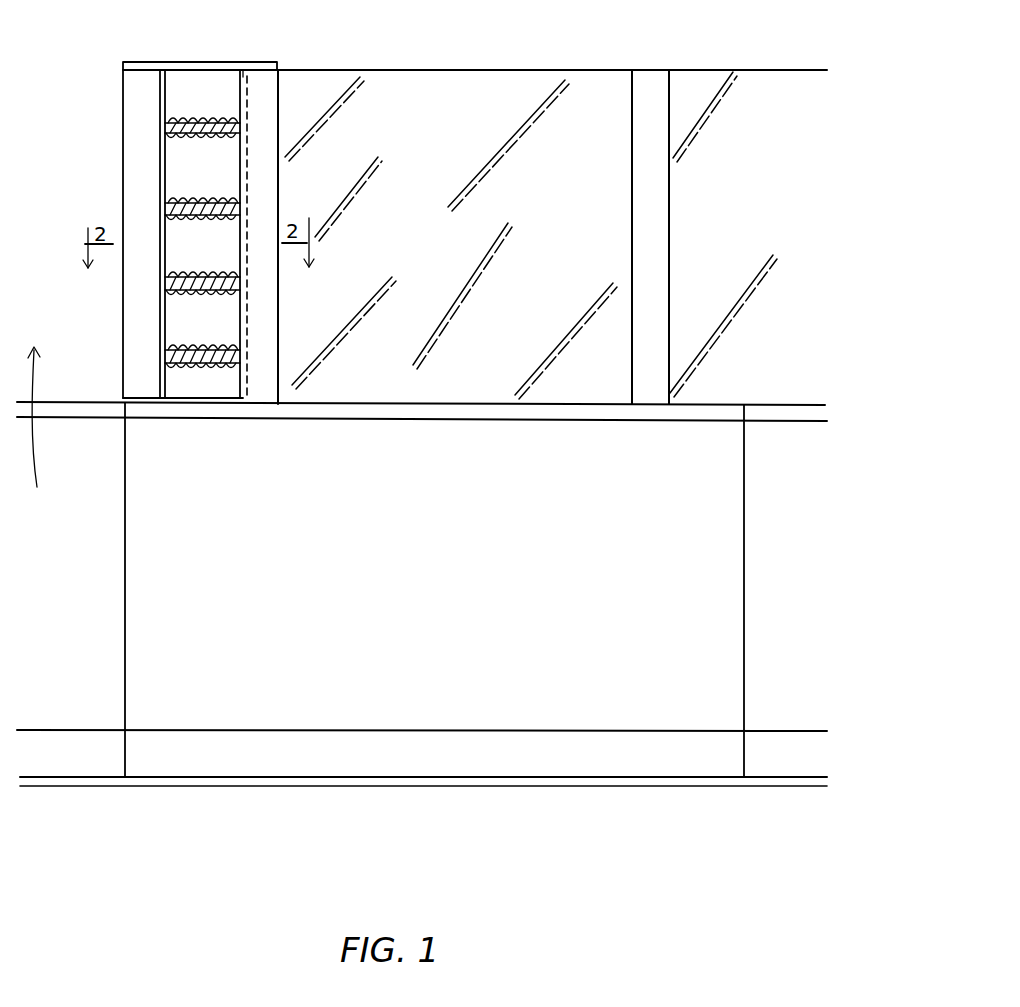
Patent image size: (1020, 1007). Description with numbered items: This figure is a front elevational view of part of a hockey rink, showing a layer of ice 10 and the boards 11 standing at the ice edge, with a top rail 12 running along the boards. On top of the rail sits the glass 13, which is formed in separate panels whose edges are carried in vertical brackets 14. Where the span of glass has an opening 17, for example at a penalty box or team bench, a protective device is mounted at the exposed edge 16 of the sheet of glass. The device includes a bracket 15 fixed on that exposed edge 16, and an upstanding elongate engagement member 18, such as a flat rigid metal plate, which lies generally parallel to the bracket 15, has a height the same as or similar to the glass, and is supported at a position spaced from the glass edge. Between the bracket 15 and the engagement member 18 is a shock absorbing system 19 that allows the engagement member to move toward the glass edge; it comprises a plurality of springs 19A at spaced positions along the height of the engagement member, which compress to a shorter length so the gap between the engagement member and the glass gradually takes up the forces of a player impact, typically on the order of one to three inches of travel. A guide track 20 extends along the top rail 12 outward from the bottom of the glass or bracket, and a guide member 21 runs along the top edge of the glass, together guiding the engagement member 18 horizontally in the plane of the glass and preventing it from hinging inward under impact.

The layer of ice 10 is at (445, 779).
The boards 11 is at (245, 624).
The top rail 12 is at (363, 412).
The glass 13 is at (475, 355).
The vertical brackets 14 is at (651, 217).
The bracket 15 is at (272, 299).
The exposed edge 16 is at (252, 363).
The opening 17 is at (43, 433).
The engagement member 18 is at (170, 392).
The shock absorbing system 19 is at (197, 204).
The springs 19A is at (196, 139).
The guide track 20 is at (225, 403).
The guide member 21 is at (197, 62).